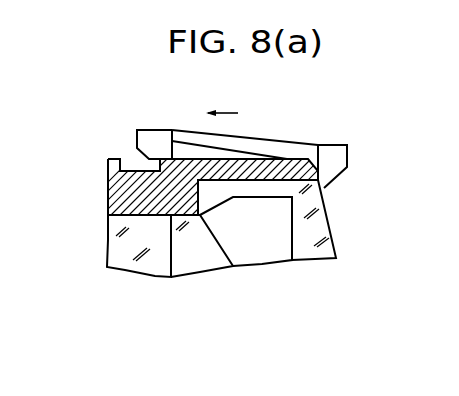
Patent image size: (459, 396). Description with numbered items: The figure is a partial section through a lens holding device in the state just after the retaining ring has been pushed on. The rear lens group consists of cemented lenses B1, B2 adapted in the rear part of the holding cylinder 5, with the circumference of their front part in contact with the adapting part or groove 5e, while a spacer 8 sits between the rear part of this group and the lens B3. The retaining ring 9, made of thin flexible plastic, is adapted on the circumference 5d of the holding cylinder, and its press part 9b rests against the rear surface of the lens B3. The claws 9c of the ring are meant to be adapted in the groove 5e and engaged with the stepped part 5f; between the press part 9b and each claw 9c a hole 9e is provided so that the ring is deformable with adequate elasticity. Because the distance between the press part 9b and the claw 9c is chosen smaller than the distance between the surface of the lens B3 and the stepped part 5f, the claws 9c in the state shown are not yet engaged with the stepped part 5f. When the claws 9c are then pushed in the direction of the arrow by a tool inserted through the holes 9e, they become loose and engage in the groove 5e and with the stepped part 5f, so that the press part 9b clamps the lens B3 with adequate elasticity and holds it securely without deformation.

The holding cylinder 5 is at (123, 188).
The circumference of the holding cylinder 5d is at (172, 215).
The groove 5e is at (132, 165).
The stepped part 5f is at (112, 207).
The spacer 8 is at (255, 188).
The retaining ring 9 is at (153, 138).
The press part 9b is at (336, 156).
The claw 9c is at (180, 157).
The hole 9e is at (278, 135).
The lens B1 is at (118, 245).
The lens B2 is at (207, 263).
The lens B3 is at (317, 223).